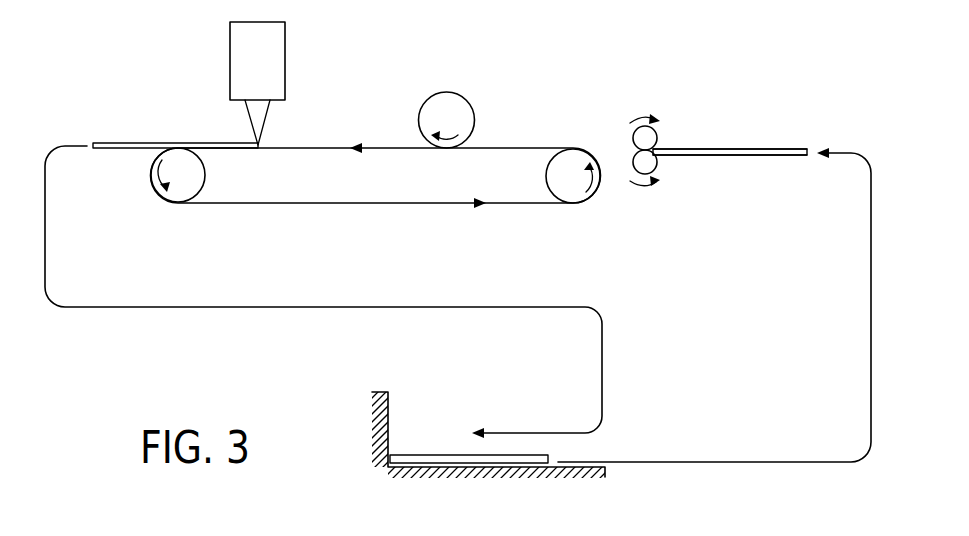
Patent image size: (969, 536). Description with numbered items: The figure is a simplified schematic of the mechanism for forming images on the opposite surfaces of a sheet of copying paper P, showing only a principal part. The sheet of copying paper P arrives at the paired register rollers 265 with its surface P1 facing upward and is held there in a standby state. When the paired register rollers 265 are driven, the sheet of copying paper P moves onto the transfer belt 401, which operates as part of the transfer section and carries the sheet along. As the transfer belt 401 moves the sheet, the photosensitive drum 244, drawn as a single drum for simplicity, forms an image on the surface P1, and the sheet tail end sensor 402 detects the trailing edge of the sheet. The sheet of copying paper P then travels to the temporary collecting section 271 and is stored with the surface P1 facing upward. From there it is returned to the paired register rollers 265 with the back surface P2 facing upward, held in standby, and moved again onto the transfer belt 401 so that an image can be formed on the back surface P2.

The transfer belt 401 is at (518, 148).
The photosensitive drum 244 is at (447, 91).
The sheet tail end sensor 402 is at (285, 45).
The paired register rollers 265 is at (633, 135).
The temporary collecting section 271 is at (442, 435).
The sheet of copying paper P is at (117, 143).
The surface P1 is at (718, 148).
The back surface P2 is at (770, 158).